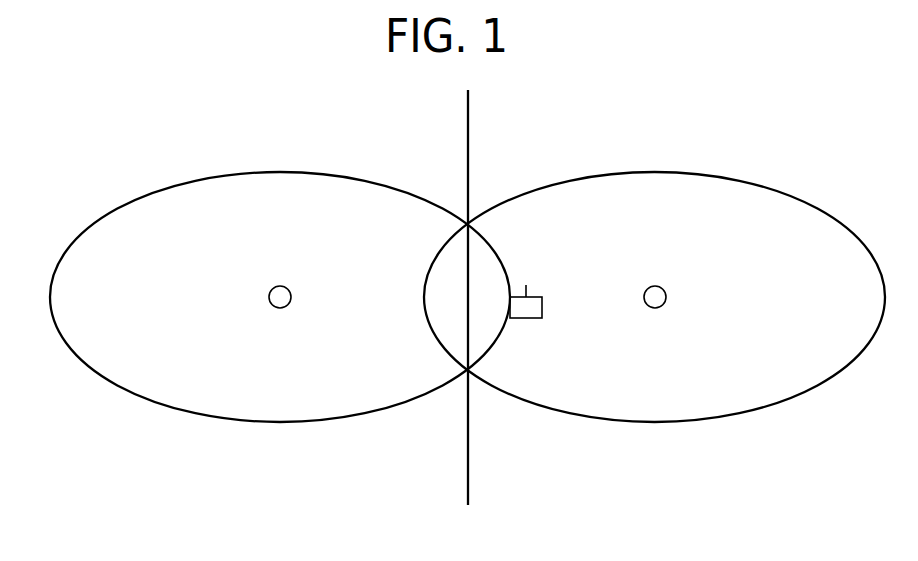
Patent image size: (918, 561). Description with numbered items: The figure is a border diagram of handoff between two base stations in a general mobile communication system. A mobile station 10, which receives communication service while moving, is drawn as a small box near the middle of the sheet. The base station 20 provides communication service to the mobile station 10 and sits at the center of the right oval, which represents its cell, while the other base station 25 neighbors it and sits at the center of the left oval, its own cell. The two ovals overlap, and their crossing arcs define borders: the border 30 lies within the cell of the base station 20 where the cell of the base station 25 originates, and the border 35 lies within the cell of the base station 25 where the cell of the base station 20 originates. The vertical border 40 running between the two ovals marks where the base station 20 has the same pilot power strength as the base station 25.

The mobile station 10 is at (548, 323).
The base station 20 is at (662, 283).
The other base station 25 is at (275, 283).
The border 30 is at (502, 250).
The border 35 is at (430, 261).
The border 40 is at (472, 333).